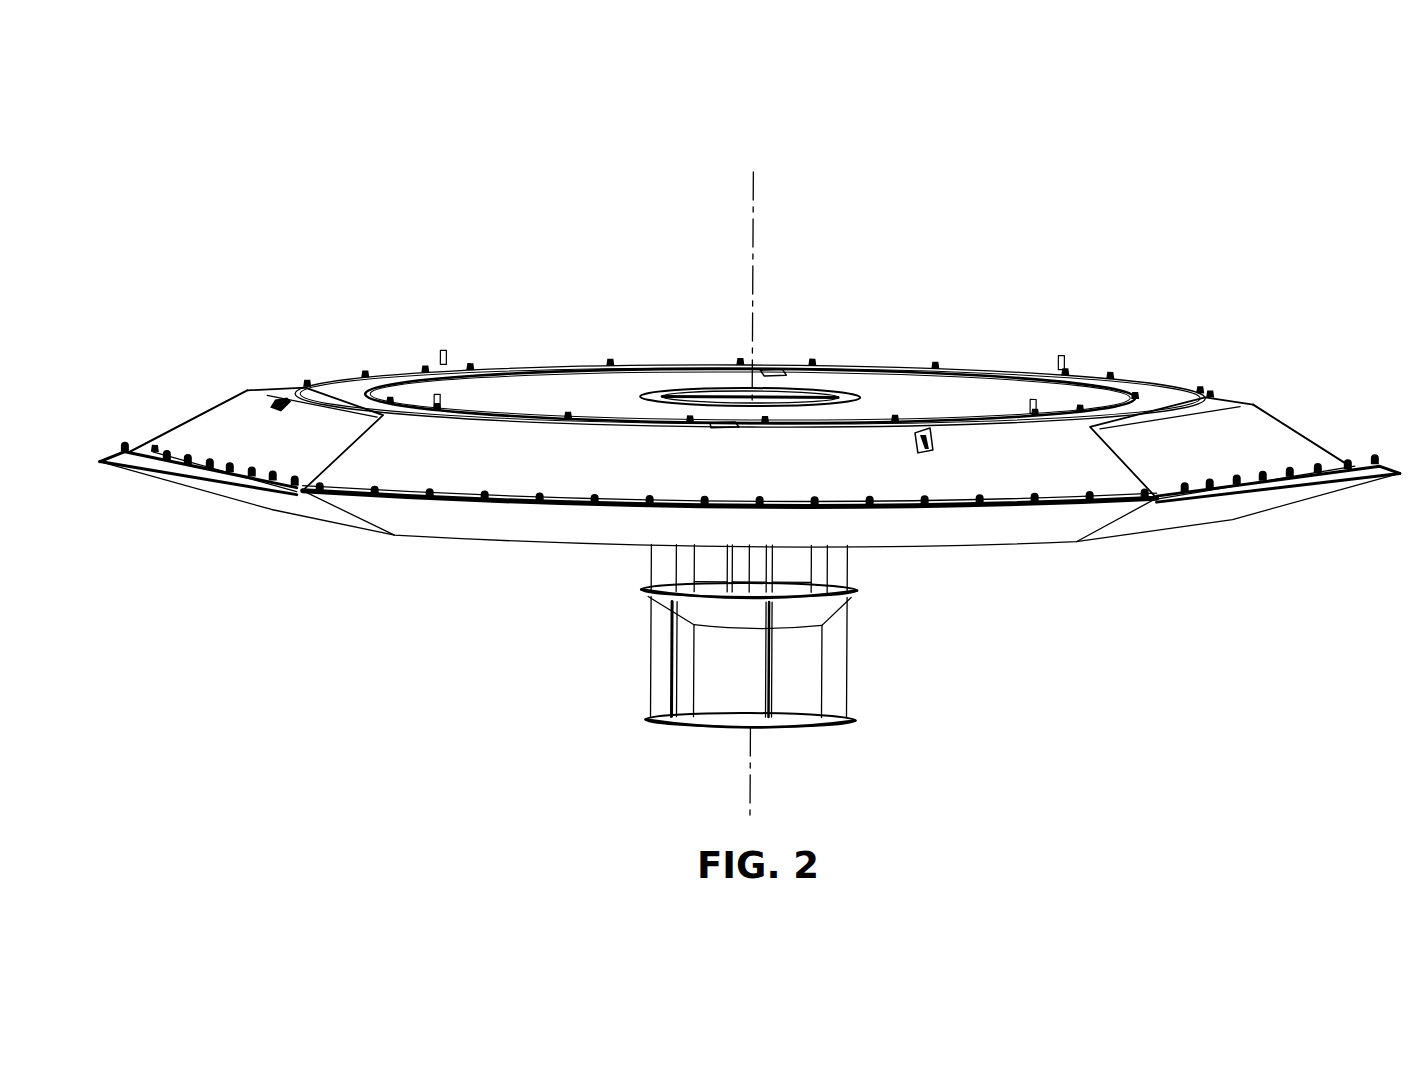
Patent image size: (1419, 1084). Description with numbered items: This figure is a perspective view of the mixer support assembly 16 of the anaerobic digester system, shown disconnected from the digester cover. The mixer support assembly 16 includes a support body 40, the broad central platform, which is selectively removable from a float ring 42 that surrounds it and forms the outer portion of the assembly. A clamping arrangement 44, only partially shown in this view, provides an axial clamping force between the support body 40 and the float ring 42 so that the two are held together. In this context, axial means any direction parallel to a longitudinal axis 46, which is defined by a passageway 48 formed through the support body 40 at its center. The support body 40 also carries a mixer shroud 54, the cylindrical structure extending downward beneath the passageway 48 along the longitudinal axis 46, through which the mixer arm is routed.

The mixer support assembly 16 is at (1232, 293).
The support body 40 is at (548, 395).
The float ring 42 is at (1263, 435).
The clamping arrangement 44 is at (352, 378).
The longitudinal axis 46 is at (753, 192).
The passageway 48 is at (799, 392).
The mixer shroud 54 is at (850, 650).